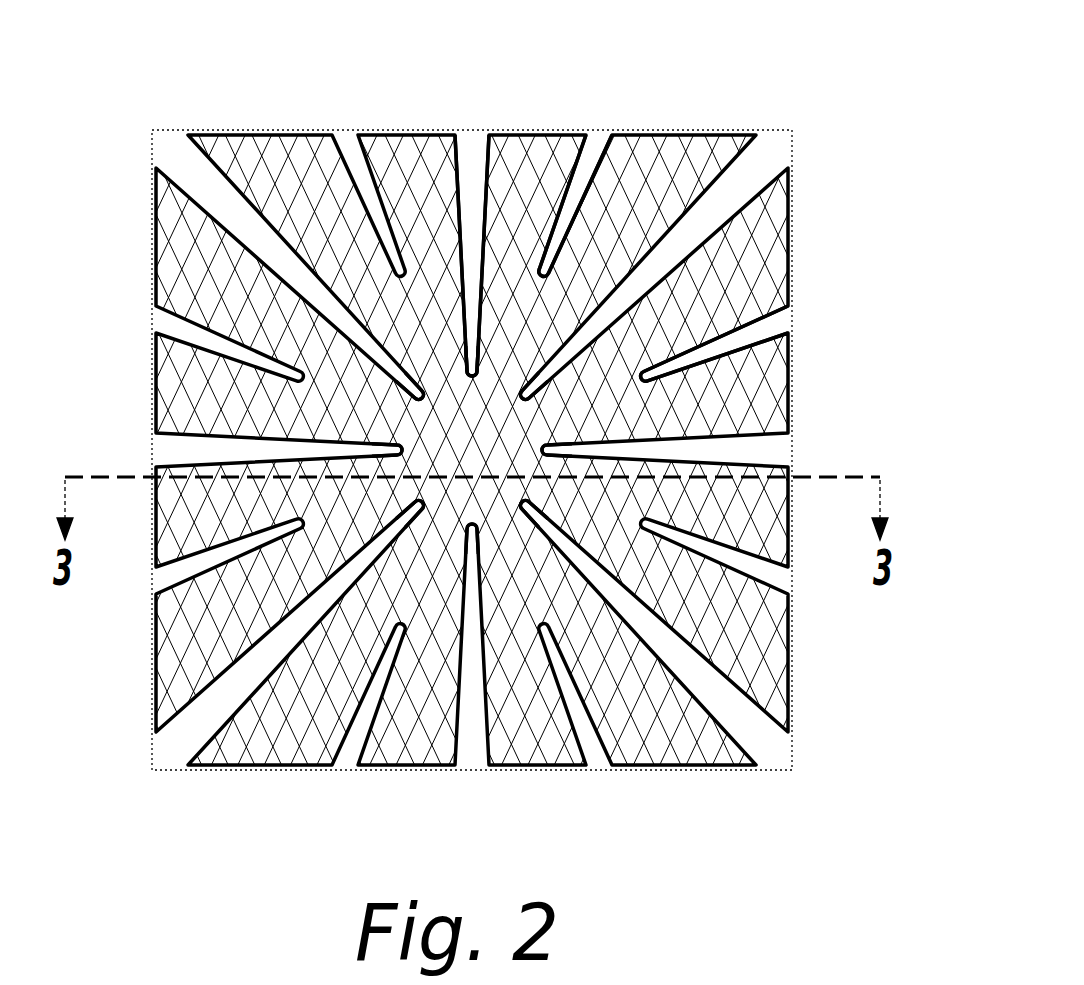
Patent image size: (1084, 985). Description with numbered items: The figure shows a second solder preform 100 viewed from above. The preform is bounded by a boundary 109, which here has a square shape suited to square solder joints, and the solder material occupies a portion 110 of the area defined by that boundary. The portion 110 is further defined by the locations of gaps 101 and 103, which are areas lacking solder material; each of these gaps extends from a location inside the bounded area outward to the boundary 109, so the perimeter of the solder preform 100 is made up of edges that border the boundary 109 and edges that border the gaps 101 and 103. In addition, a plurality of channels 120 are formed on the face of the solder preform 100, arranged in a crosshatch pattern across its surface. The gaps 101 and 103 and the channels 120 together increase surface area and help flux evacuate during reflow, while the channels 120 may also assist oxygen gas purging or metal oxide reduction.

The solder preform 100 is at (542, 413).
The gap 101 is at (473, 125).
The gap 103 is at (604, 125).
The boundary 109 is at (790, 321).
The portion of the area 110 is at (499, 447).
The channels 120 is at (679, 749).